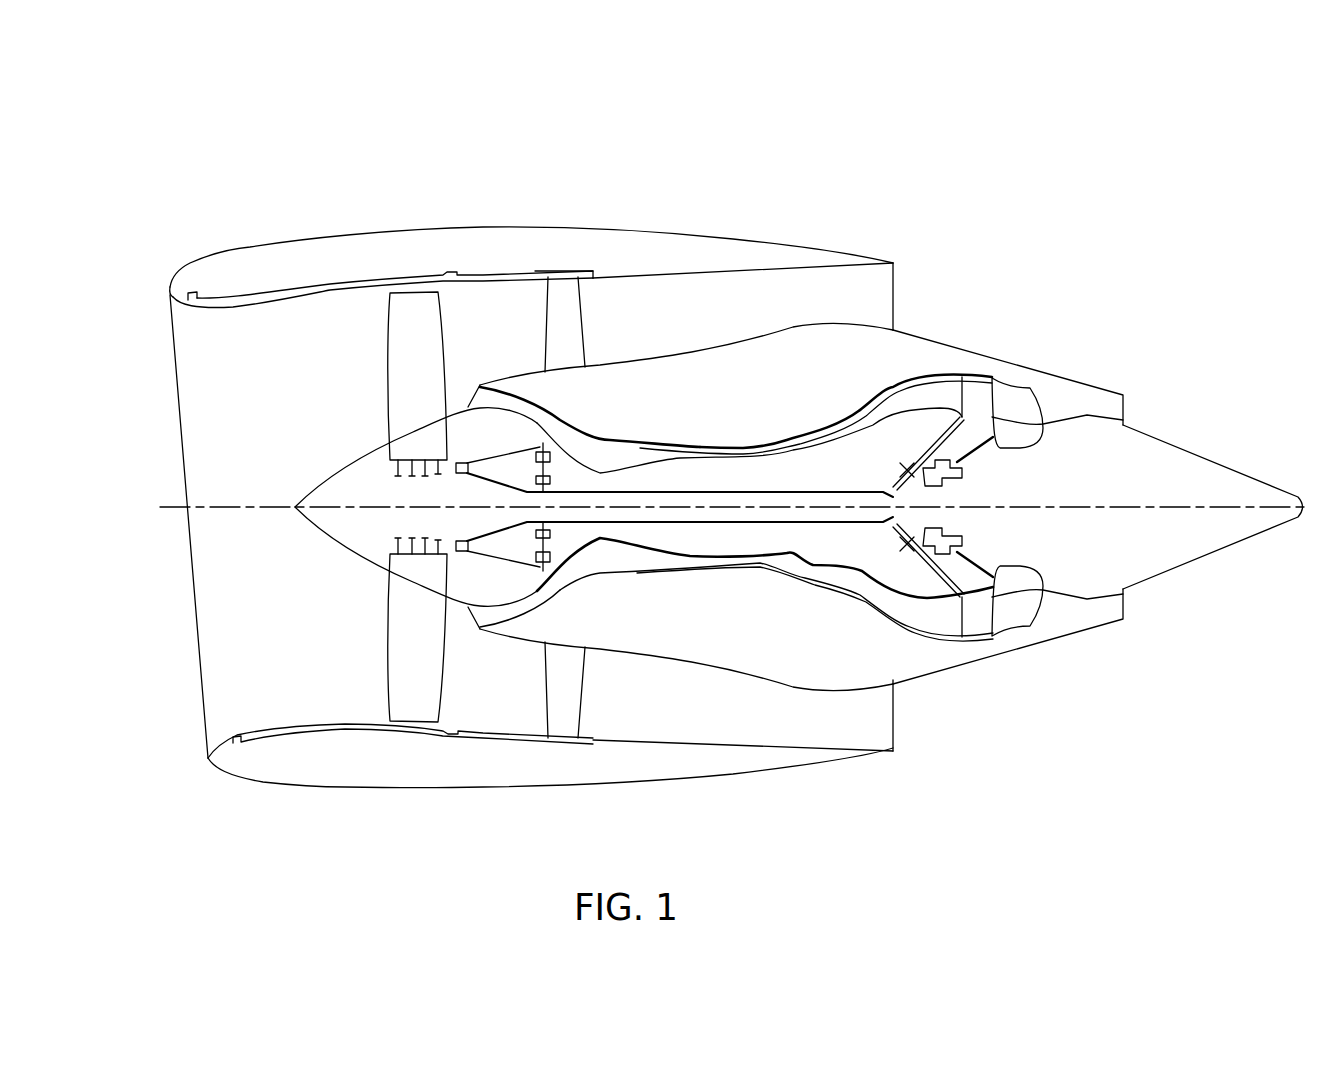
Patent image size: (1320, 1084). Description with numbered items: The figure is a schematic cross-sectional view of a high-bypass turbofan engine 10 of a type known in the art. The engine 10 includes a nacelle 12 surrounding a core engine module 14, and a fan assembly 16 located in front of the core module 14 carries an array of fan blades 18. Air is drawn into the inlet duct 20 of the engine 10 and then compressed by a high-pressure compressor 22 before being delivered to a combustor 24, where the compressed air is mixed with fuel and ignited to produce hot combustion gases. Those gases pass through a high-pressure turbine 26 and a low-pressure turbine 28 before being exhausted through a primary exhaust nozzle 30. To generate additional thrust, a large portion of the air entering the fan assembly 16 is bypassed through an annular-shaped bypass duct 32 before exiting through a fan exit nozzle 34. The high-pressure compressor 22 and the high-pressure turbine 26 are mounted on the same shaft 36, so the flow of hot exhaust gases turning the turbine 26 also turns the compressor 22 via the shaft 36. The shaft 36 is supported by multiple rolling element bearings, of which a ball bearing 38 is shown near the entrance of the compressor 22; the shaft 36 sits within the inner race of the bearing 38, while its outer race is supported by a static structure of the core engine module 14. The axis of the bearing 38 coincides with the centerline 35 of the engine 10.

The high-bypass turbofan engine 10 is at (1023, 80).
The nacelle 12 is at (482, 195).
The core engine module 14 is at (930, 663).
The fan assembly 16 is at (300, 639).
The fan blades 18 is at (395, 346).
The inlet duct 20 is at (128, 682).
The high-pressure compressor 22 is at (627, 455).
The combustor 24 is at (797, 445).
The high-pressure turbine 26 is at (823, 588).
The low-pressure turbine 28 is at (927, 392).
The primary exhaust nozzle 30 is at (1082, 364).
The bypass duct 32 is at (657, 329).
The fan exit nozzle 34 is at (920, 294).
The centerline 35 is at (1075, 507).
The shaft 36 is at (598, 543).
The ball bearing 38 is at (519, 545).